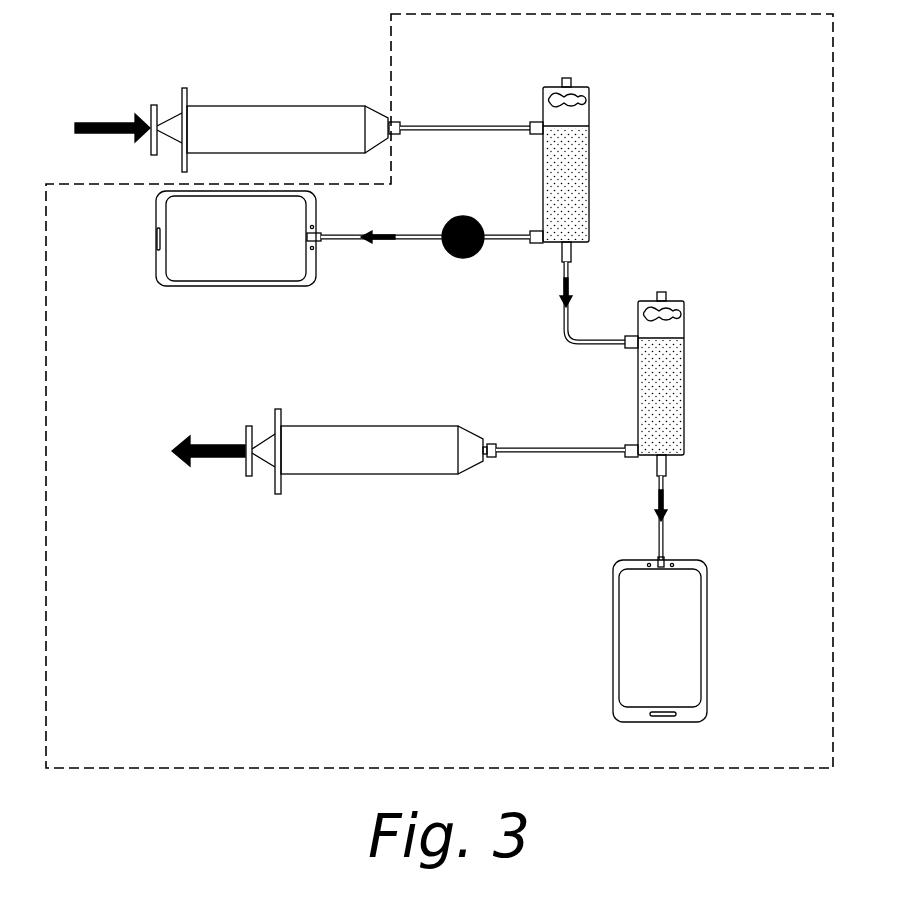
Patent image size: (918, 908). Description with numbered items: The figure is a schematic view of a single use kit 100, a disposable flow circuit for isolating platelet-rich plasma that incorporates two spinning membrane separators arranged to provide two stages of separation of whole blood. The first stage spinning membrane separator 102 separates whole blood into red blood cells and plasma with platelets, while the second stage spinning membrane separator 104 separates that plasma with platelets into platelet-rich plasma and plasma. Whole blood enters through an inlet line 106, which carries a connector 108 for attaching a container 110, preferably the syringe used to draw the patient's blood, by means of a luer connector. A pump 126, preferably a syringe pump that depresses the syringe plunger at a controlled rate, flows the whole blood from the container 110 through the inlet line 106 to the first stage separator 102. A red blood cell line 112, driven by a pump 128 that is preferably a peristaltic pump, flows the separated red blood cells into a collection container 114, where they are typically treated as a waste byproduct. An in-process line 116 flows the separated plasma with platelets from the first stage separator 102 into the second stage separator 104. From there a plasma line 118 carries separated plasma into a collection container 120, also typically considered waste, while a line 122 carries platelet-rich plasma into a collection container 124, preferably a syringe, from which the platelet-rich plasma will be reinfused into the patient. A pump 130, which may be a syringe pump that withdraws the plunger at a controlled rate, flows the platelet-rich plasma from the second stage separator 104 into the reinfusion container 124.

The single use kit 100 is at (138, 822).
The first stage spinning membrane separator 102 is at (589, 147).
The second stage spinning membrane separator 104 is at (684, 358).
The inlet line 106 is at (490, 125).
The connector 108 is at (395, 120).
The container 110 is at (266, 105).
The red blood cell line 112 is at (347, 243).
The collection container 114 is at (150, 217).
The in-process line 116 is at (583, 347).
The plasma line 118 is at (663, 483).
The collection container 120 is at (707, 609).
The line 122 is at (532, 455).
The collection container 124 is at (340, 477).
The pump 126 is at (90, 120).
The pump 128 is at (459, 262).
The pump 130 is at (208, 458).